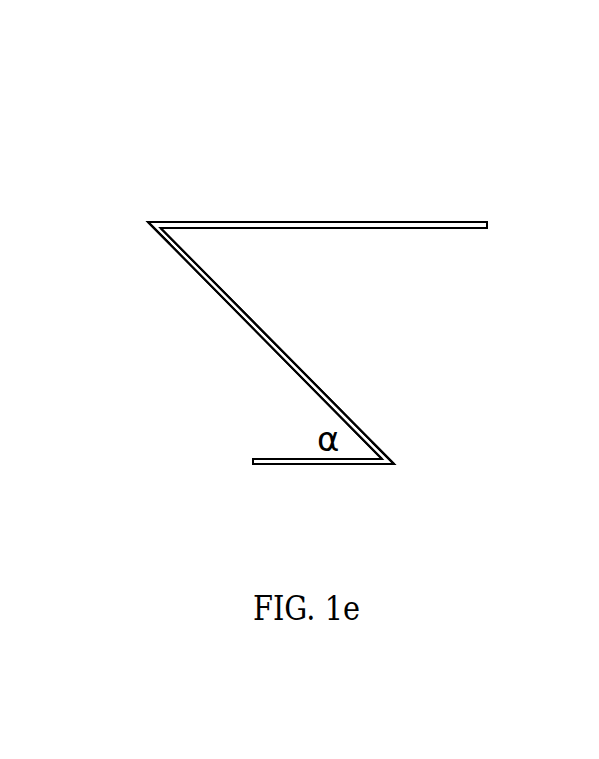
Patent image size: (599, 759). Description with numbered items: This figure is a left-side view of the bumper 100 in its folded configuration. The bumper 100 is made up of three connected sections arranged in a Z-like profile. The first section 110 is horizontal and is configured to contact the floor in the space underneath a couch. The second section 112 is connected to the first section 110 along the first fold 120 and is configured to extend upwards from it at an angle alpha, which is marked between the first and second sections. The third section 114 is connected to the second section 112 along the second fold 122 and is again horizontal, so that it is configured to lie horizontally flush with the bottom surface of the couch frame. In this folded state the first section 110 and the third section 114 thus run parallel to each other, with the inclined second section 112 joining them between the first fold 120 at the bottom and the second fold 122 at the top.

The bumper 100 is at (313, 56).
The first section 110 is at (280, 458).
The second section 112 is at (297, 366).
The third section 114 is at (325, 221).
The first fold 120 is at (398, 461).
The second fold 122 is at (147, 221).